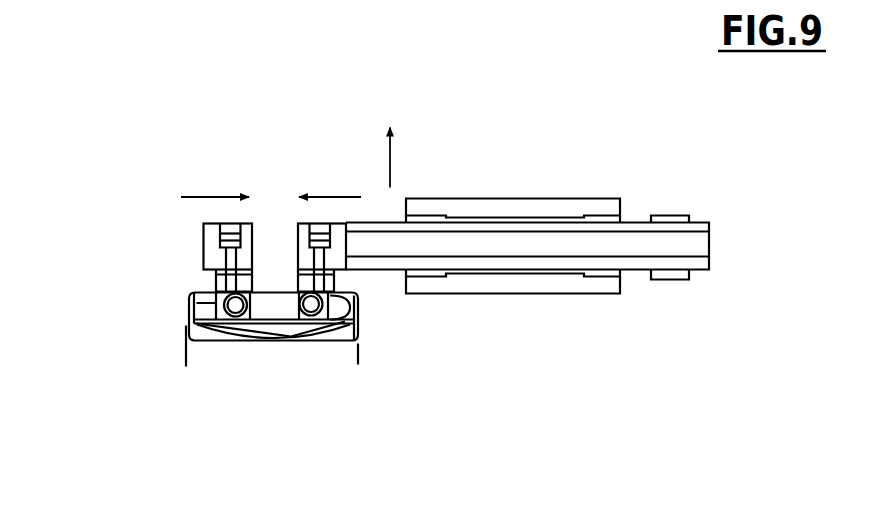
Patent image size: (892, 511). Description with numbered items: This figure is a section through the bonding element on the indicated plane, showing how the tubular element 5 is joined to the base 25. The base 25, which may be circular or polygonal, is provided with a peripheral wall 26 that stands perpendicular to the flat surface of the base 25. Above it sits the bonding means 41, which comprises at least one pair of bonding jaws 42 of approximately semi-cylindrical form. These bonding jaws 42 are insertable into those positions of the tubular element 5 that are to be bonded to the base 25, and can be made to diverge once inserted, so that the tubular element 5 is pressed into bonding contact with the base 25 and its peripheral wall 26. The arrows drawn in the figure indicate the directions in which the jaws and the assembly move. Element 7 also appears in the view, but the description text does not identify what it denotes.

The bonding means 41 is at (308, 155).
The bonding jaws 42 is at (199, 295).
The tubular element 5 is at (184, 317).
The peripheral wall 26 is at (207, 335).
The base 25 is at (235, 335).
The stop roller 7 is at (340, 287).